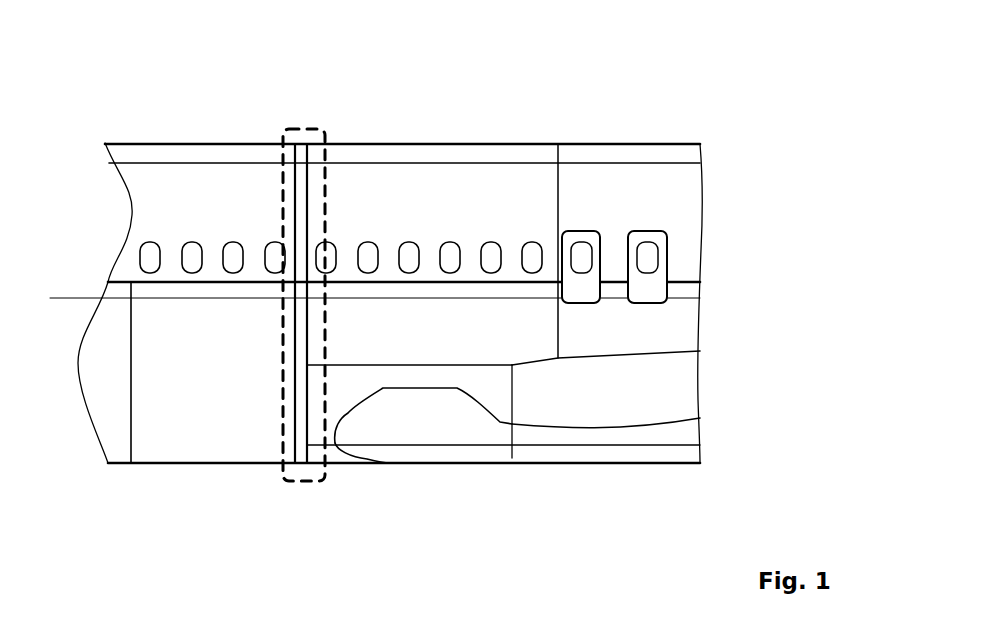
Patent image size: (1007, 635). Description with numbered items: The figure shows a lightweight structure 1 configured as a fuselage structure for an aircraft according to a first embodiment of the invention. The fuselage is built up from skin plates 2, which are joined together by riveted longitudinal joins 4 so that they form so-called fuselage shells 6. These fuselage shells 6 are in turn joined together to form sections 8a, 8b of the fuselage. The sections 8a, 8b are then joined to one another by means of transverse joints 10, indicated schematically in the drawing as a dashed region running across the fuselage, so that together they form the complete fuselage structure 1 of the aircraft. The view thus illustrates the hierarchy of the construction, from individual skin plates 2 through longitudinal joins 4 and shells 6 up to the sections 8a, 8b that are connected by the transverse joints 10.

The lightweight structure 1 is at (654, 67).
The skin plates 2 is at (199, 186).
The riveted longitudinal joins 4 is at (258, 247).
The fuselage shells 6 is at (165, 146).
The section 8a is at (165, 466).
The section 8b is at (493, 466).
The transverse joints 10 is at (294, 489).